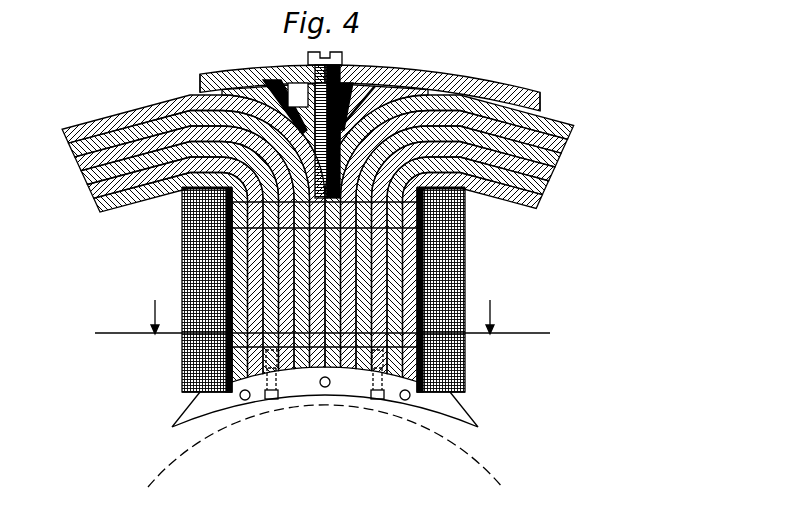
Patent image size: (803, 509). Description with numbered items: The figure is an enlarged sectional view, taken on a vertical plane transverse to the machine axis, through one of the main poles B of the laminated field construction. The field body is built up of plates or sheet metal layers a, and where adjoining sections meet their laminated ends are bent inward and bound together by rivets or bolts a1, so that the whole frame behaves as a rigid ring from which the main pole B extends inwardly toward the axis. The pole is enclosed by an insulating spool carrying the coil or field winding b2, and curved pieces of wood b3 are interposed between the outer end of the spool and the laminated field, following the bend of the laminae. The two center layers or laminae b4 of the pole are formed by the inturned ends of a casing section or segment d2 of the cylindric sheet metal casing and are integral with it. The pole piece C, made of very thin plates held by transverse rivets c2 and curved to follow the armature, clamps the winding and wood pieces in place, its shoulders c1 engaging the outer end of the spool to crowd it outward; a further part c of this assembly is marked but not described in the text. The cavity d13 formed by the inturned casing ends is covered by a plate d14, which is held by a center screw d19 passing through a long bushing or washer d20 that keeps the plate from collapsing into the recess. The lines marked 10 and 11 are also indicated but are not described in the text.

The main pole B is at (319, 233).
The plates or sheet metal layers a is at (319, 238).
The rivets or bolts a1 is at (320, 288).
The coil or field winding b2 is at (458, 240).
The pieces of wood b3 is at (480, 205).
The center layers or laminae b4 is at (308, 66).
The pole piece C is at (334, 409).
The fastening piece c is at (377, 400).
The shoulders c1 is at (432, 395).
The transverse rivets c2 is at (403, 400).
The casing section or segment d2 is at (562, 120).
The cavity or recess d13 is at (366, 76).
The cover plate d14 is at (267, 78).
The center screw d19 is at (344, 66).
The long bushing or washer d20 is at (203, 89).
The section line 10 is at (332, 323).
The plate end 11 is at (528, 104).